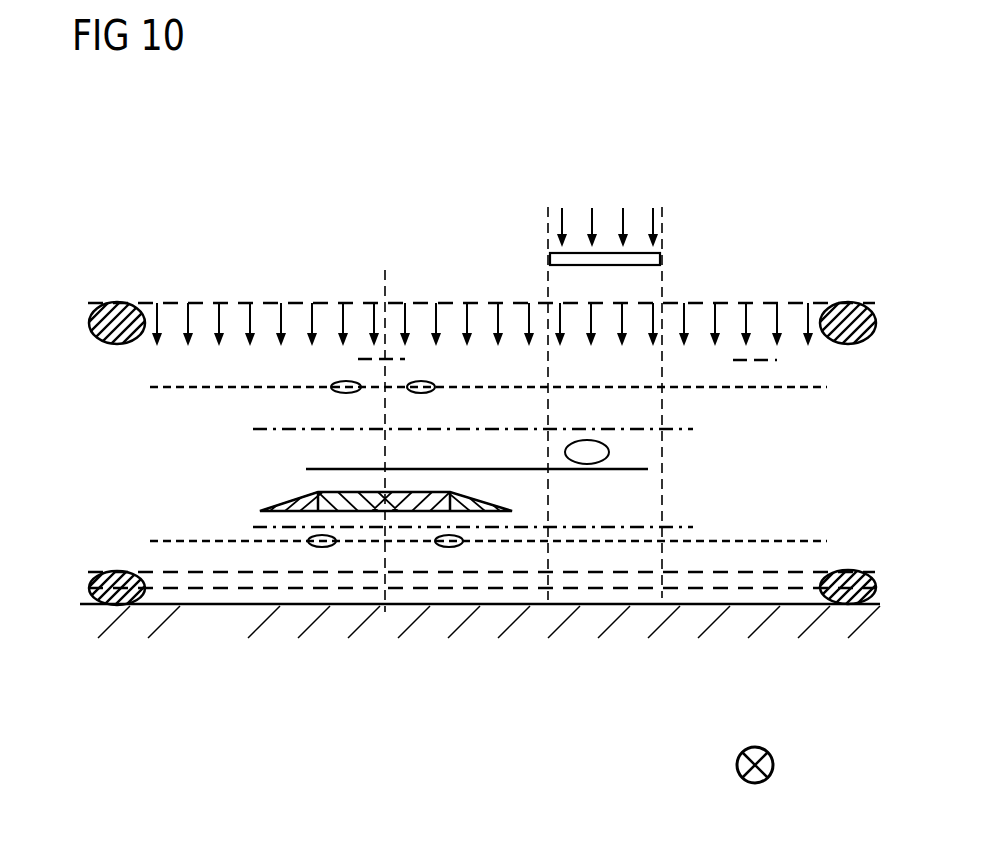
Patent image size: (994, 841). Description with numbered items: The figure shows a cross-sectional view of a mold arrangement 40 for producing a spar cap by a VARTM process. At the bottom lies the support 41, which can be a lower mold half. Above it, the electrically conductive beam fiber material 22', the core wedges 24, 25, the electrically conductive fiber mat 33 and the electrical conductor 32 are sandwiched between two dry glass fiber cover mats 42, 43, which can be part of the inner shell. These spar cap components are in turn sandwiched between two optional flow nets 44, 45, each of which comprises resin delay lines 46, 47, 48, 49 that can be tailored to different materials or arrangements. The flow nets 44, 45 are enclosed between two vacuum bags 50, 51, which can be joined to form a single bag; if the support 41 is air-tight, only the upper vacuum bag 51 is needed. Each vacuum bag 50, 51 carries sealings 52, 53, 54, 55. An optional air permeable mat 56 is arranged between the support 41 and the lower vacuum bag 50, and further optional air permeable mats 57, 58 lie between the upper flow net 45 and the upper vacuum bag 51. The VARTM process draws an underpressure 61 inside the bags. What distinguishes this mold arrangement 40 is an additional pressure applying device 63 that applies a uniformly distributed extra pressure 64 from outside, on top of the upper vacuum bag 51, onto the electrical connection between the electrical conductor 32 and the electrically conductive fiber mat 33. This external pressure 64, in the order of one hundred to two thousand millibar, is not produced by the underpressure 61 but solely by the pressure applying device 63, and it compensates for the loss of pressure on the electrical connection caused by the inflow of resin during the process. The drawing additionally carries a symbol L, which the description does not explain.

The mold arrangement 40 is at (422, 112).
The electrically conductive beam fiber material 22' is at (386, 612).
The core wedge 24 is at (285, 512).
The core wedge 25 is at (473, 512).
The electrical conductor 32 is at (609, 452).
The electrically conductive fiber mat 33 is at (532, 470).
The support 41 is at (185, 607).
The cover mat 42 is at (572, 527).
The cover mat 43 is at (459, 427).
The flow net 44 is at (705, 541).
The flow net 45 is at (215, 387).
The resin delay line 46 is at (322, 546).
The resin delay line 47 is at (449, 546).
The resin delay line 48 is at (346, 381).
The resin delay line 49 is at (421, 381).
The vacuum bag 50 is at (758, 572).
The vacuum bag 51 is at (712, 303).
The sealing 52 is at (113, 607).
The sealing 53 is at (848, 605).
The sealing 54 is at (117, 303).
The sealing 55 is at (852, 303).
The air permeable mat 56 is at (662, 596).
The air permeable mat 57 is at (367, 359).
The air permeable mat 58 is at (757, 360).
The underpressure 61 is at (148, 310).
The pressure applying device 63 is at (580, 253).
The extra pressure 64 is at (623, 228).
The light source direction symbol L is at (774, 763).